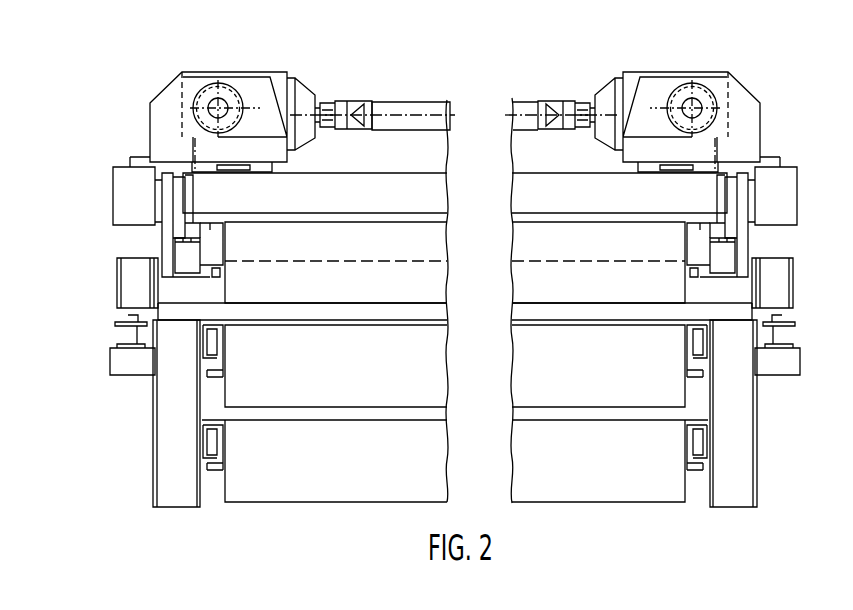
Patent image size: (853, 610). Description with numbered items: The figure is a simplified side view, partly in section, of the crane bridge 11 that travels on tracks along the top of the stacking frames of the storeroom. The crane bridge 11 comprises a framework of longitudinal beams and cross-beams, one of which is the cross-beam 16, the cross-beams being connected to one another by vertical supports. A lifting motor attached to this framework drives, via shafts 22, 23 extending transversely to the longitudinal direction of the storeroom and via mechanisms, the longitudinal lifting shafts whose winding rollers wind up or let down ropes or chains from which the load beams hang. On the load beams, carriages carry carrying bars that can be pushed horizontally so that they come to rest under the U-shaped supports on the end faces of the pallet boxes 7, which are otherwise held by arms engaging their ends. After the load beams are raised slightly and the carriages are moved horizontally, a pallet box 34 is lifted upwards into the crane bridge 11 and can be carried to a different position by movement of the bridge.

The pallet boxes 7 is at (338, 480).
The crane bridge 11 is at (504, 72).
The cross-beam 16 is at (417, 185).
The shaft 22 is at (383, 112).
The shaft 23 is at (528, 105).
The pallet box 34 is at (530, 285).